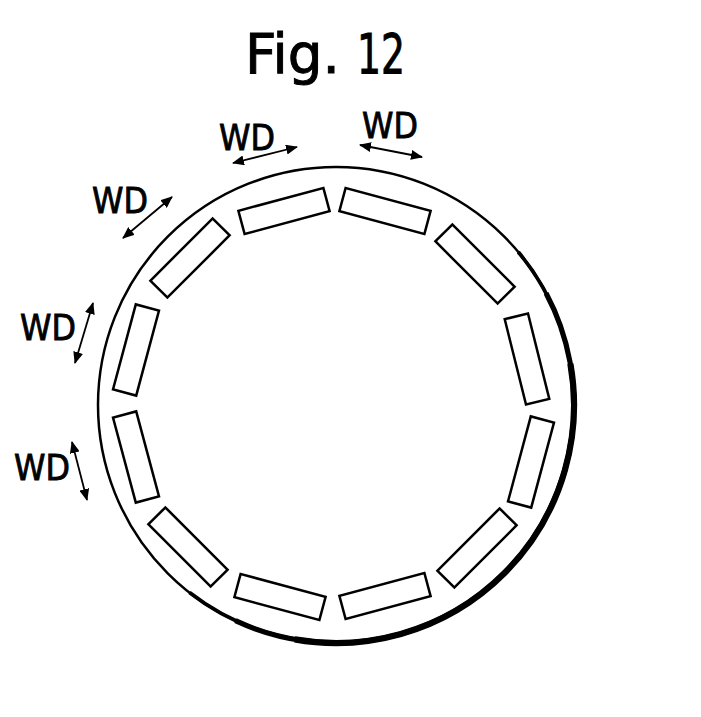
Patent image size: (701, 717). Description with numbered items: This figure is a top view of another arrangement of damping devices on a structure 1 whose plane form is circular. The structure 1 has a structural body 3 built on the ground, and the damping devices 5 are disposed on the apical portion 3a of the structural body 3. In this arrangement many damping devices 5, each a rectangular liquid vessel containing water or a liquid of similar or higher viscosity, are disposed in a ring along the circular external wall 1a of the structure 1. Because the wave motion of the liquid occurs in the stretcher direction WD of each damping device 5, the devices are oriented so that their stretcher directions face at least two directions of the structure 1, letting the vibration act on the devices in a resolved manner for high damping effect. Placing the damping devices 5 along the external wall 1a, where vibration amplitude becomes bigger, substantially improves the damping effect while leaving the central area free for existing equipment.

The structure 1 is at (389, 385).
The external wall 1a is at (575, 408).
The structural body 3 is at (466, 162).
The apical portion 3a is at (535, 295).
The damping device 5 is at (378, 443).